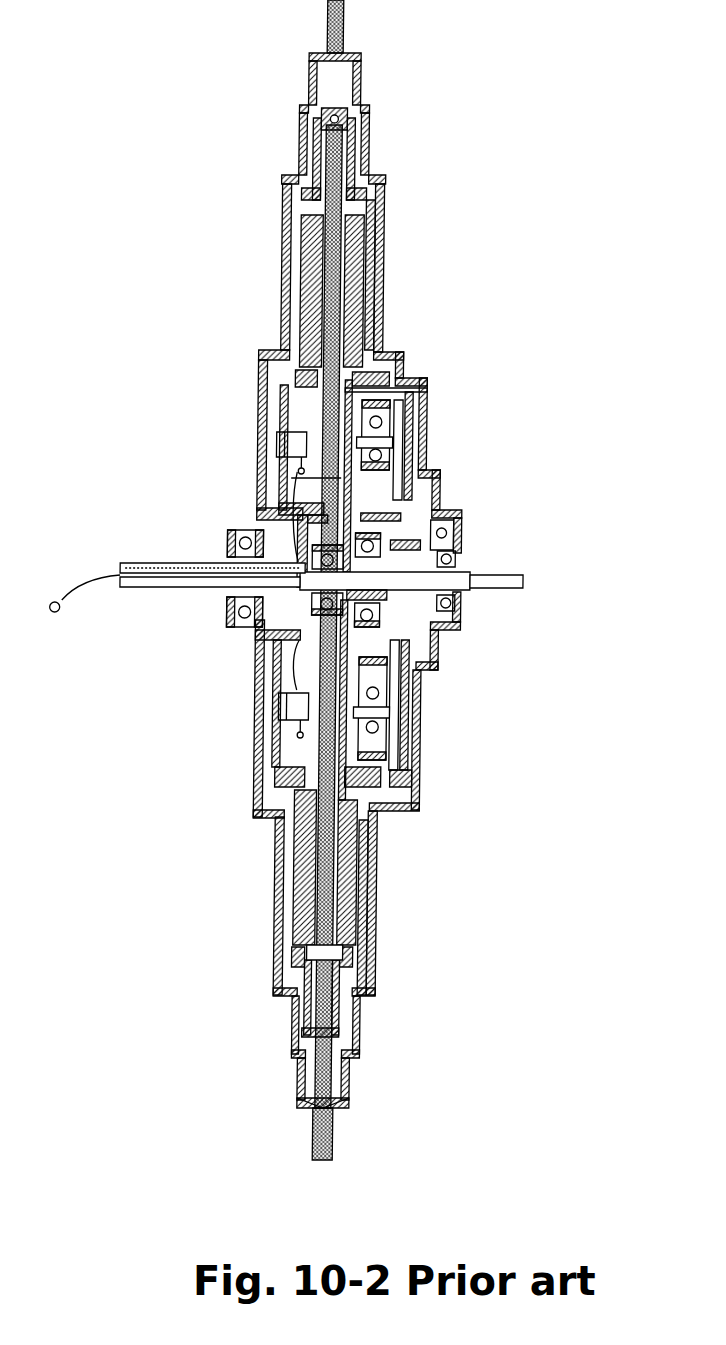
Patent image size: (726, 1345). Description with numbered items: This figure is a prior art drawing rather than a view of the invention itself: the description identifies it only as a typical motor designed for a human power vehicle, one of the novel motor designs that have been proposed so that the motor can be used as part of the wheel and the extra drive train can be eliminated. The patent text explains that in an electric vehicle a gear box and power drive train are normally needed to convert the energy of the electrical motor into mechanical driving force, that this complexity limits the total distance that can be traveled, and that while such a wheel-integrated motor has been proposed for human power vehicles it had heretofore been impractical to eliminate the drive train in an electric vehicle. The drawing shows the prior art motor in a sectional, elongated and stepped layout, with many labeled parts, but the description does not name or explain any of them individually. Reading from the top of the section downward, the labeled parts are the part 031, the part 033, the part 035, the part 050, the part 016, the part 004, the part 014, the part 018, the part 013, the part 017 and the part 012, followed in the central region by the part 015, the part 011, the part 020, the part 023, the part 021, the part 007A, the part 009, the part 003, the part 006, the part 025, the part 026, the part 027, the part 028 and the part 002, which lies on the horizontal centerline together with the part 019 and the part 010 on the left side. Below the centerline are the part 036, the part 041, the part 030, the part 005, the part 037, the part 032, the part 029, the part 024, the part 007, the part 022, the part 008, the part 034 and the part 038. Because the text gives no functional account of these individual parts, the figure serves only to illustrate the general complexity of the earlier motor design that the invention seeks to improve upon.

The shaft end 031 is at (337, 20).
The end cap 033 is at (362, 80).
The housing flange 035 is at (312, 75).
The ring 050 is at (307, 148).
The bearing 016 is at (323, 113).
The sleeve 004 is at (353, 172).
The bushing 014 is at (368, 133).
The coil 018 is at (290, 217).
The housing wall 013 is at (377, 215).
The magnet 017 is at (297, 290).
The core 012 is at (373, 302).
The plate 015 is at (387, 375).
The inner wall 011 is at (260, 420).
The gear housing 020 is at (420, 408).
The spacer 023 is at (390, 442).
The sleeve 021 is at (420, 455).
The sensor 007A is at (268, 445).
The lead wire 009 is at (290, 478).
The flange 003 is at (290, 502).
The bracket 006 is at (290, 512).
The plate 025 is at (463, 523).
The screw 026 is at (440, 490).
The nut 027 is at (440, 503).
The bearing 028 is at (457, 560).
The output shaft 002 is at (523, 582).
The bearing 019 is at (227, 540).
The cable 010 is at (73, 573).
The bearing 036 is at (227, 612).
The collar 041 is at (473, 590).
The ring 030 is at (450, 630).
The sleeve 005 is at (297, 645).
The sensor 037 is at (323, 660).
The gear 032 is at (460, 660).
The bearing 029 is at (430, 688).
The bearing 024 is at (413, 720).
The lead wire 007 is at (262, 710).
The spacer 022 is at (413, 760).
The sleeve 008 is at (270, 773).
The lower housing 034 is at (413, 787).
The seal 038 is at (313, 1127).